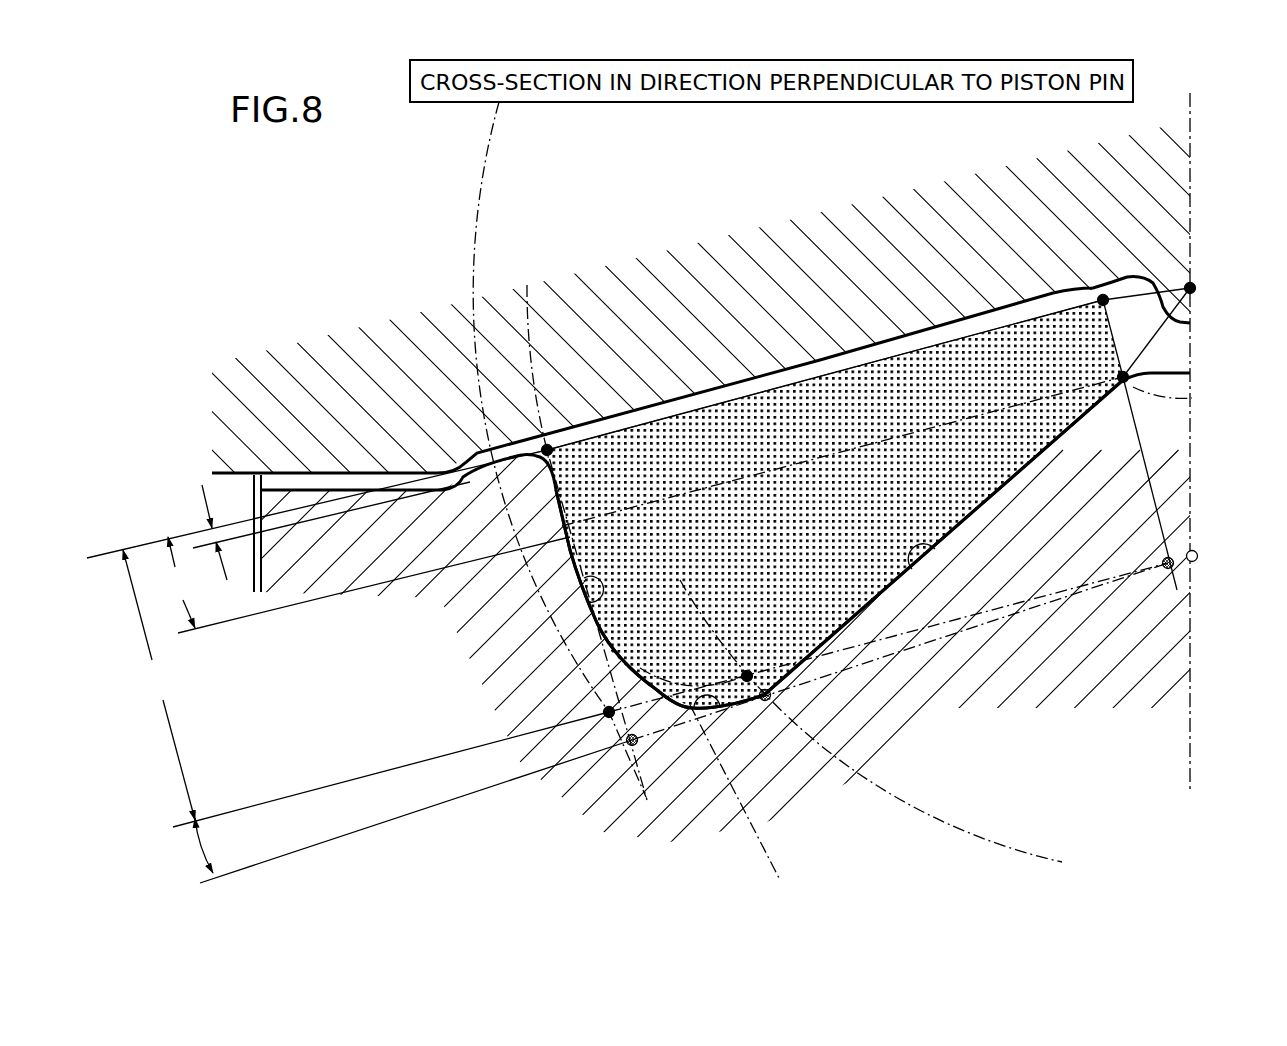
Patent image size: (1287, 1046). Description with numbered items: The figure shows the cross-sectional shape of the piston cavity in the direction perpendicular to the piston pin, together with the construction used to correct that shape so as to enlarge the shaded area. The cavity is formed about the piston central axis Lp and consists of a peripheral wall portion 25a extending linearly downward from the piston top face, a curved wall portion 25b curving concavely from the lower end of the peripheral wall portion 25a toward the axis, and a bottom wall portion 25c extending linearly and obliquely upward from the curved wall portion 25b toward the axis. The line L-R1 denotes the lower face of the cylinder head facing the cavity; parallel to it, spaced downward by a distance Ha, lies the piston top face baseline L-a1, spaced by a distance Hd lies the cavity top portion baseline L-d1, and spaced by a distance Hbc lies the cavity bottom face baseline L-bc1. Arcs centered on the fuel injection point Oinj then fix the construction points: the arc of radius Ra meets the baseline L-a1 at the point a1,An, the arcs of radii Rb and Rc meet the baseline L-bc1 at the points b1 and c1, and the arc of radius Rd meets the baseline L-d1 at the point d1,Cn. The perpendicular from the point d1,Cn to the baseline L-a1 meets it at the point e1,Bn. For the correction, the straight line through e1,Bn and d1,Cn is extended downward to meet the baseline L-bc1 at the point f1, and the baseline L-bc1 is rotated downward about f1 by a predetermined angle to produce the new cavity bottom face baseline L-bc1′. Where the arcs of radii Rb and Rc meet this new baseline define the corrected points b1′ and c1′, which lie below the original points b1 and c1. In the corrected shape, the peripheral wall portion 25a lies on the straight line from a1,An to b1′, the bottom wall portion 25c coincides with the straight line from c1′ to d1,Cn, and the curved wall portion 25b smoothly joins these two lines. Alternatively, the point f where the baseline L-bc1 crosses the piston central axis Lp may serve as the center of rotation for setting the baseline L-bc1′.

The peripheral wall portion 25a is at (588, 600).
The curved wall portion 25b is at (717, 710).
The bottom wall portion 25c is at (933, 552).
The piston central axis Lp is at (1192, 94).
The fuel injection point Oinj is at (1194, 289).
The radius Ra is at (1190, 288).
The radius Rb is at (1190, 288).
The radius Rc is at (1190, 288).
The radius Rd is at (1190, 288).
The intersection point a1 a1,An is at (552, 448).
The intersection point e1 e1,Bn is at (1106, 298).
The intersection point d1 d1,Cn is at (1121, 382).
The intersection point b1 is at (606, 710).
The intersection point c1 is at (749, 672).
The intersection point b1' b1′ is at (630, 745).
The intersection point c1' c1′ is at (766, 702).
The intersection point f is at (1197, 552).
The intersection point f1 is at (1173, 567).
The line L-R1 is at (923, 323).
The piston top face baseline L-a1 is at (868, 360).
The cavity top portion baseline L-d1 is at (755, 475).
The cavity bottom face baseline L-bc1 is at (947, 625).
The new cavity bottom face baseline L-bc1′ is at (867, 665).
The distance Ha is at (211, 528).
The distance Hd is at (180, 582).
The distance Hbc is at (159, 685).